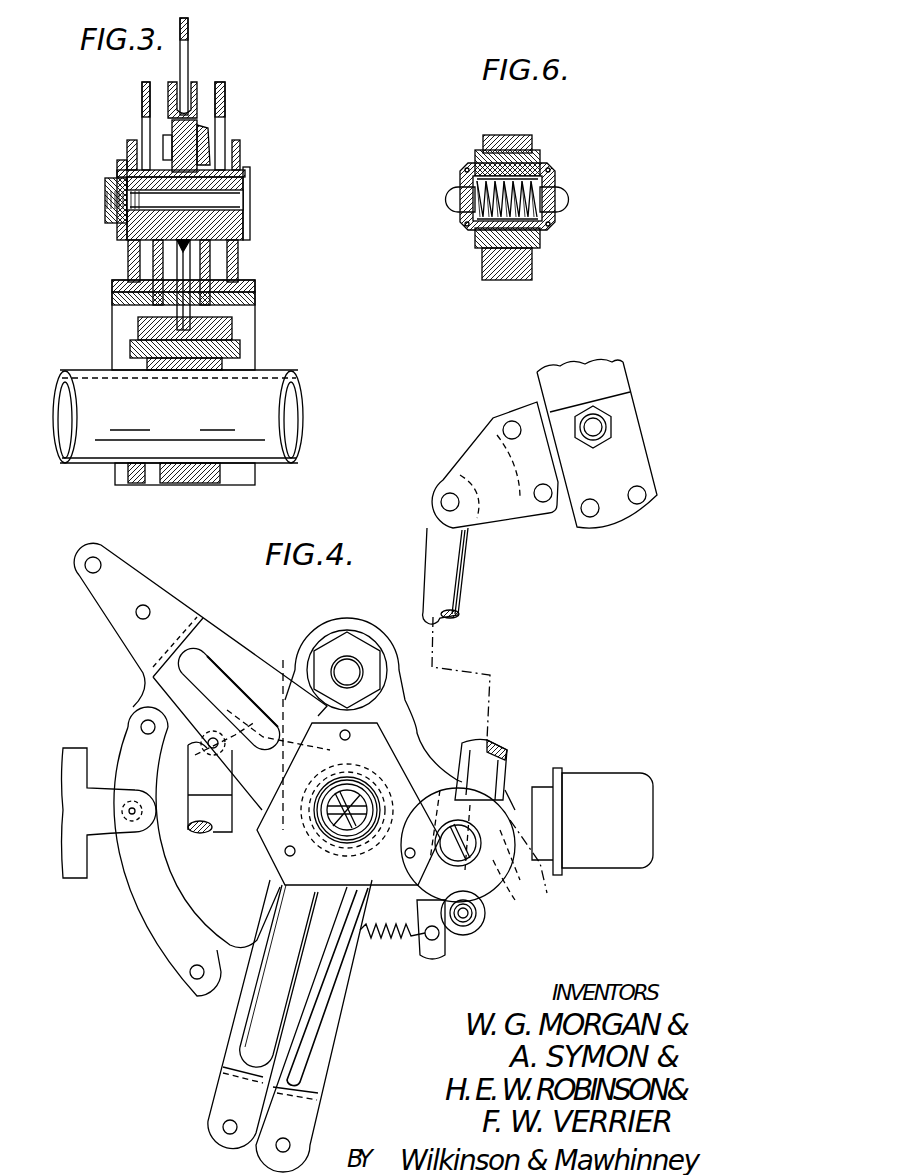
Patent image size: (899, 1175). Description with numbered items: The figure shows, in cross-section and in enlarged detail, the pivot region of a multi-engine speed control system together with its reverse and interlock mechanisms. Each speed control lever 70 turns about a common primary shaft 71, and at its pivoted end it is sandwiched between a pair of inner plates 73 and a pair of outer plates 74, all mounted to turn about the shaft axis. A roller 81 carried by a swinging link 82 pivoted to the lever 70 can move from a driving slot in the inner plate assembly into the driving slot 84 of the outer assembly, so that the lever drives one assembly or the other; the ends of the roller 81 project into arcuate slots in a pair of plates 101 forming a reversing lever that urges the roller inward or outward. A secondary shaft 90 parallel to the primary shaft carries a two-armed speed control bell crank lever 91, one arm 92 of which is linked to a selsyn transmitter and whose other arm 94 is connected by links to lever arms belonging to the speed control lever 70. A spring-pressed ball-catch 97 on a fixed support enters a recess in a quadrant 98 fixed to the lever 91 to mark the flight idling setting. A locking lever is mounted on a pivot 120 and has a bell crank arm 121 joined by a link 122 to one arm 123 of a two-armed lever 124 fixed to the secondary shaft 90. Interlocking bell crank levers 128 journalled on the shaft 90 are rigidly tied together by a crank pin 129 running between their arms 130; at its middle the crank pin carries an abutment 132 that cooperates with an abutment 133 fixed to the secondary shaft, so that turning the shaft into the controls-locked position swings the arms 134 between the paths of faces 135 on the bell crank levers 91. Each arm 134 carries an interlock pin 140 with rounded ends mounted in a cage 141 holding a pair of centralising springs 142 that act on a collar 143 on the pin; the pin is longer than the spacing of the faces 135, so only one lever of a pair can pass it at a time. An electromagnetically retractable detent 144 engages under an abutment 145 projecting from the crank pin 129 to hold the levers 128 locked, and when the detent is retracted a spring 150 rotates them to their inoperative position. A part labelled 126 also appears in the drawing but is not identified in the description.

In FIG. 3, the speed control lever 70 is at (189, 27).
In FIG. 3, the primary shaft 71 is at (214, 423).
In FIG. 3, the inner plates 73 is at (162, 273).
In FIG. 3, the outer plates 74 is at (145, 95).
In FIG. 3, the roller 81 is at (245, 192).
In FIG. 3, the swinging link 82 is at (168, 83).
In FIG. 3, the driving slot 84 is at (222, 132).
In FIG. 3, the plates 101 is at (130, 143).
In FIG. 4, the secondary shaft 90 is at (380, 787).
In FIG. 4, the speed control bell crank lever 91 is at (250, 637).
In FIG. 4, the arm 92 is at (290, 1040).
In FIG. 4, the arm 94 is at (170, 613).
In FIG. 4, the ball-catch 97 is at (127, 817).
In FIG. 4, the quadrant 98 is at (157, 934).
In FIG. 4, the pivot 120 is at (598, 428).
In FIG. 4, the bell crank arm 121 is at (503, 505).
In FIG. 4, the link 122 is at (457, 572).
In FIG. 4, the arm 123 is at (420, 903).
In FIG. 4, the two-armed lever 124 is at (254, 701).
In FIG. 4, the peg 126 is at (210, 815).
In FIG. 4, the interlocking bell crank levers 128 is at (427, 724).
In FIG. 4, the crank pin 129 is at (490, 905).
In FIG. 4, the arm 130 is at (510, 793).
In FIG. 4, the abutment 132 is at (440, 845).
In FIG. 4, the abutment 133 is at (318, 895).
In FIG. 6, the arms 134 is at (520, 258).
In FIG. 4, the arms 134 is at (368, 645).
In FIG. 4, the faces 135 is at (282, 660).
In FIG. 6, the pin 140 is at (550, 195).
In FIG. 4, the pin 140 is at (358, 670).
In FIG. 6, the cage 141 is at (533, 151).
In FIG. 4, the cage 141 is at (348, 614).
In FIG. 6, the centralising springs 142 is at (523, 168).
In FIG. 6, the collar 143 is at (538, 236).
In FIG. 4, the electromagnetically retractable detent 144 is at (517, 820).
In FIG. 4, the abutment 145 is at (512, 895).
In FIG. 4, the spring 150 is at (388, 945).